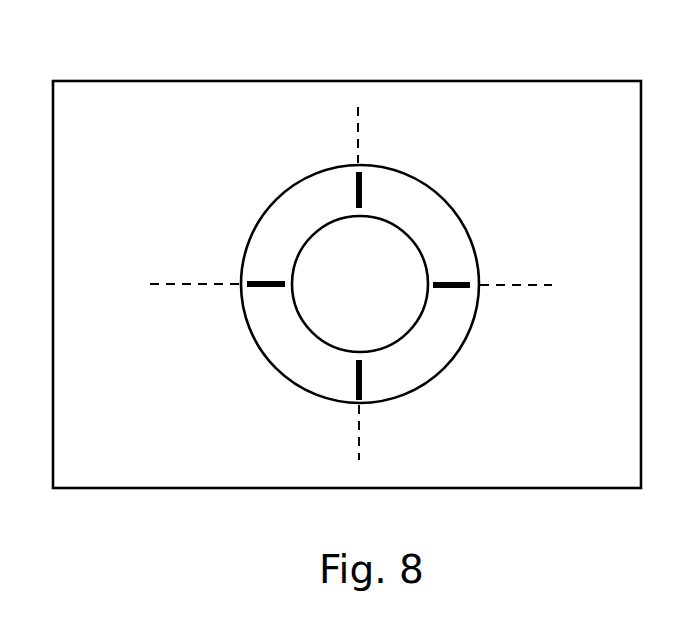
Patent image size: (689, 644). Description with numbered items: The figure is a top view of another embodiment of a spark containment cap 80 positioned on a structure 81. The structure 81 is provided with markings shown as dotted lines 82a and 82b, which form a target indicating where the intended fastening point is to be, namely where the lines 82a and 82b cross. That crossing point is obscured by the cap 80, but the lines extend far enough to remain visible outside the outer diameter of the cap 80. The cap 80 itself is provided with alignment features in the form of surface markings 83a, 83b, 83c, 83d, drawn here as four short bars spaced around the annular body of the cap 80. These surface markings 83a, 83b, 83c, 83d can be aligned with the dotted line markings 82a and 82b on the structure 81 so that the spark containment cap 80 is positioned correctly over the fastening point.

The spark containment cap 80 is at (418, 362).
The structure 81 is at (130, 105).
The dotted line marking 82a is at (360, 145).
The dotted line marking 82b is at (507, 287).
The surface marking 83a is at (363, 192).
The surface marking 83b is at (448, 282).
The surface marking 83c is at (265, 287).
The surface marking 83d is at (355, 377).